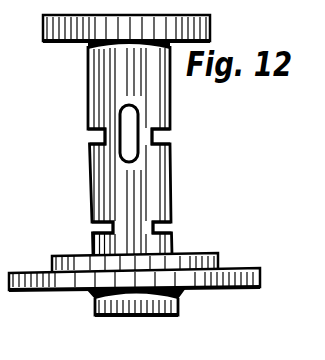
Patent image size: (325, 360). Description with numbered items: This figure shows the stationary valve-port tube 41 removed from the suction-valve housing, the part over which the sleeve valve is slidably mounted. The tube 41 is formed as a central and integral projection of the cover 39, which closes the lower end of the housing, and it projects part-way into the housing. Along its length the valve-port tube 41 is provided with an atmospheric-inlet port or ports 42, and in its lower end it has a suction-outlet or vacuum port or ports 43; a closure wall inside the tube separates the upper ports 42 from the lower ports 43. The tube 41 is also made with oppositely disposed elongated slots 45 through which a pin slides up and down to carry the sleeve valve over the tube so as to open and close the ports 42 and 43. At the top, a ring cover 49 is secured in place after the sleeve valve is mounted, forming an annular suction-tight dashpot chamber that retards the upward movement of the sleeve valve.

The cover 39 is at (50, 290).
The valve-port tube 41 is at (158, 182).
The atmospheric-inlet port 42 is at (100, 139).
The suction-outlet port 43 is at (102, 231).
The elongated slot 45 is at (130, 112).
The ring cover 49 is at (74, 36).